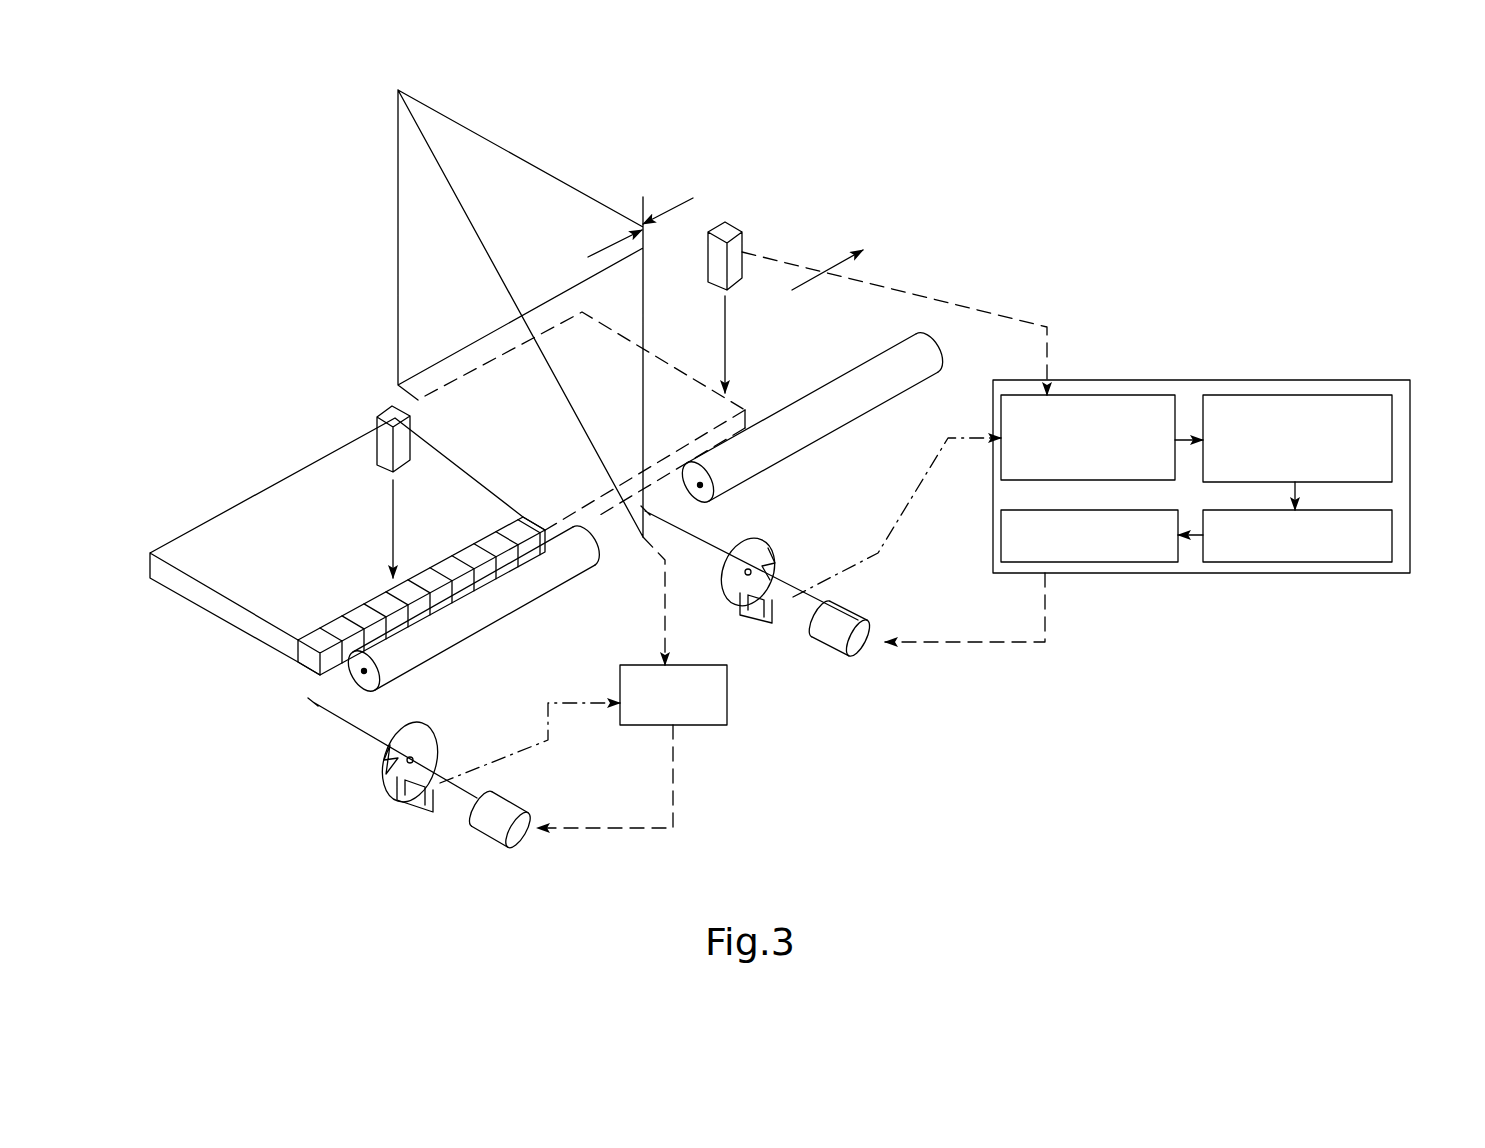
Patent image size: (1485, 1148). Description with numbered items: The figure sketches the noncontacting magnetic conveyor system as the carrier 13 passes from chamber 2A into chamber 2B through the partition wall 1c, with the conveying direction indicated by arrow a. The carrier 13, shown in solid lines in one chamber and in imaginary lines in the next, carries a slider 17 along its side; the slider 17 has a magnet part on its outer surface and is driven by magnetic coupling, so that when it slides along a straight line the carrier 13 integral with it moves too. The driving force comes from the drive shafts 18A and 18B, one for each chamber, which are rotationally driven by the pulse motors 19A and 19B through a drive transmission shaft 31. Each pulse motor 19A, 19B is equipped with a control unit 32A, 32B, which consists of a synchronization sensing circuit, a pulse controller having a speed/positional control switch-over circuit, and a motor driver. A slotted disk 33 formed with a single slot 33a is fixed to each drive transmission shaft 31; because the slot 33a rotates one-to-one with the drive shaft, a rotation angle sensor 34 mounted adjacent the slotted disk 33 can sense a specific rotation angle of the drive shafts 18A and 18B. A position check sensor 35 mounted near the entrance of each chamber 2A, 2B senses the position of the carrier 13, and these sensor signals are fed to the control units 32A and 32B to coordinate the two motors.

The partition wall 1c is at (518, 160).
The chamber 2A is at (590, 255).
The chamber 2B is at (692, 197).
The conveying direction a is at (838, 268).
The carrier 13 is at (480, 363).
The slider 17 is at (305, 662).
The drive shaft 18A is at (476, 618).
The drive shaft 18B is at (842, 410).
The pulse motor 19A is at (528, 797).
The pulse motor 19B is at (868, 605).
The drive transmission shaft 31 is at (455, 772).
The control unit 32A is at (727, 705).
The control unit 32B is at (1410, 480).
The slotted disk 33 is at (432, 742).
The slot 33a is at (386, 760).
The rotation angle sensor 34 is at (410, 805).
The position check sensor 35 is at (393, 408).